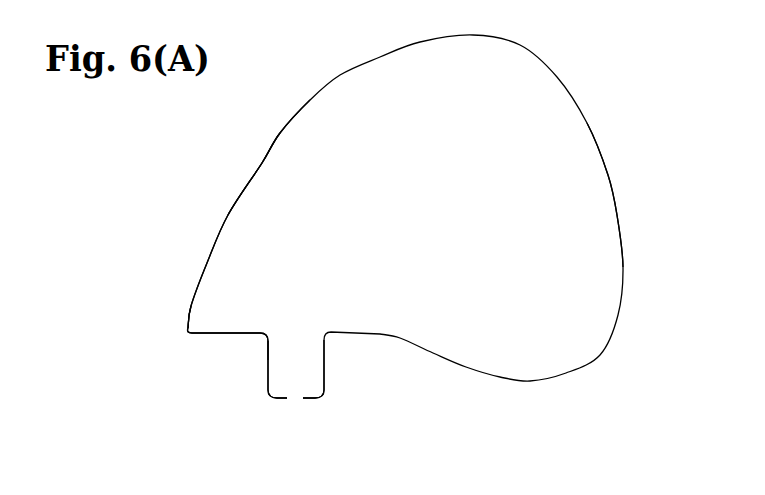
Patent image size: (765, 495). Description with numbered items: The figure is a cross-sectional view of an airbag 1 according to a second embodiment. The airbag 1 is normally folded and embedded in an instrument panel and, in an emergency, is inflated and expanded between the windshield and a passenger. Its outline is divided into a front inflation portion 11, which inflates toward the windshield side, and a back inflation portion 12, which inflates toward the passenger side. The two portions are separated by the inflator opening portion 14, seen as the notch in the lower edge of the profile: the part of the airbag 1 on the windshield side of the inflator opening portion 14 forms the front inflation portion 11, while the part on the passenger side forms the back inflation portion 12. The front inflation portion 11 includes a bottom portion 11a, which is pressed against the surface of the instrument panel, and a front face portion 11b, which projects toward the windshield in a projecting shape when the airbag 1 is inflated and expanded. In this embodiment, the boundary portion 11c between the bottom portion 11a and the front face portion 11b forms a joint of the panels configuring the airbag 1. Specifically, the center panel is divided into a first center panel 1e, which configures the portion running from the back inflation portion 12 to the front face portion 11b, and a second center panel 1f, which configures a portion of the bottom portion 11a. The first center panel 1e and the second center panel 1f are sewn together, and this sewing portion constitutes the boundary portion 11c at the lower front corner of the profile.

The airbag 1 is at (590, 53).
The front inflation portion 11 is at (215, 211).
The bottom portion 11a is at (223, 335).
The front face portion 11b is at (258, 162).
The boundary portion 11c is at (194, 330).
The back inflation portion 12 is at (631, 201).
The inflator opening portion 14 is at (296, 402).
The first center panel 1e is at (281, 135).
The second center panel 1f is at (269, 338).